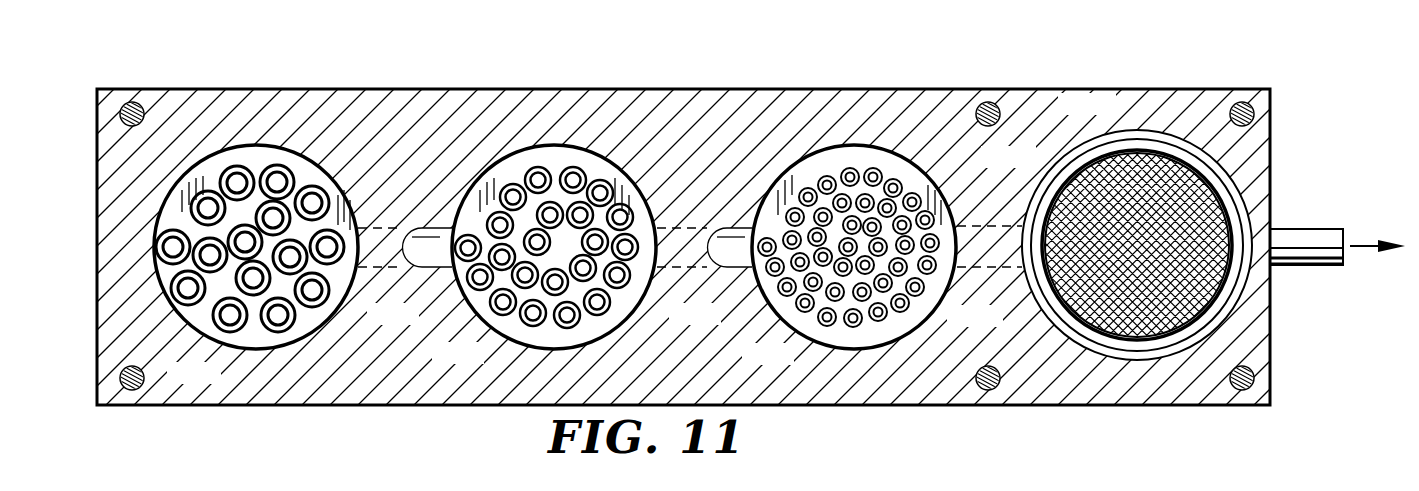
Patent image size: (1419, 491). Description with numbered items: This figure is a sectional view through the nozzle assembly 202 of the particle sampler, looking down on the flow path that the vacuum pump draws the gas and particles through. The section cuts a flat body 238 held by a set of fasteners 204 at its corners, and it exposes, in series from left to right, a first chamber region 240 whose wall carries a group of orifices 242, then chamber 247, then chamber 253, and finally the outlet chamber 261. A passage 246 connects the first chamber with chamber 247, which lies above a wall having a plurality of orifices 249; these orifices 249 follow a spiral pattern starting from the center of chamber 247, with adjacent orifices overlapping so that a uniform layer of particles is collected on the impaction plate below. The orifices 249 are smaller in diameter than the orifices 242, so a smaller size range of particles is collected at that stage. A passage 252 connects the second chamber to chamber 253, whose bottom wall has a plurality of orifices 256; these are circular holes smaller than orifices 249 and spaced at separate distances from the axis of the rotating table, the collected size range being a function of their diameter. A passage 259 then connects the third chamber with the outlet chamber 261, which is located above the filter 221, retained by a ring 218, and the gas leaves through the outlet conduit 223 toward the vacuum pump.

The nozzle assembly 202 is at (709, 243).
The bolts 204 is at (131, 101).
The manifold body 238 is at (343, 103).
The first cavity 240 is at (258, 165).
The orifices 242 is at (260, 328).
The passage 246 is at (438, 262).
The chamber 247 is at (511, 172).
The orifices 249 is at (525, 318).
The passage 252 is at (732, 258).
The chamber 253 is at (860, 160).
The orifices 256 is at (825, 315).
The passage 259 is at (985, 250).
The outlet chamber 261 is at (1133, 142).
The filter 221 is at (1062, 185).
The retaining ring 218 is at (1207, 316).
The outlet conduit 223 is at (1295, 235).